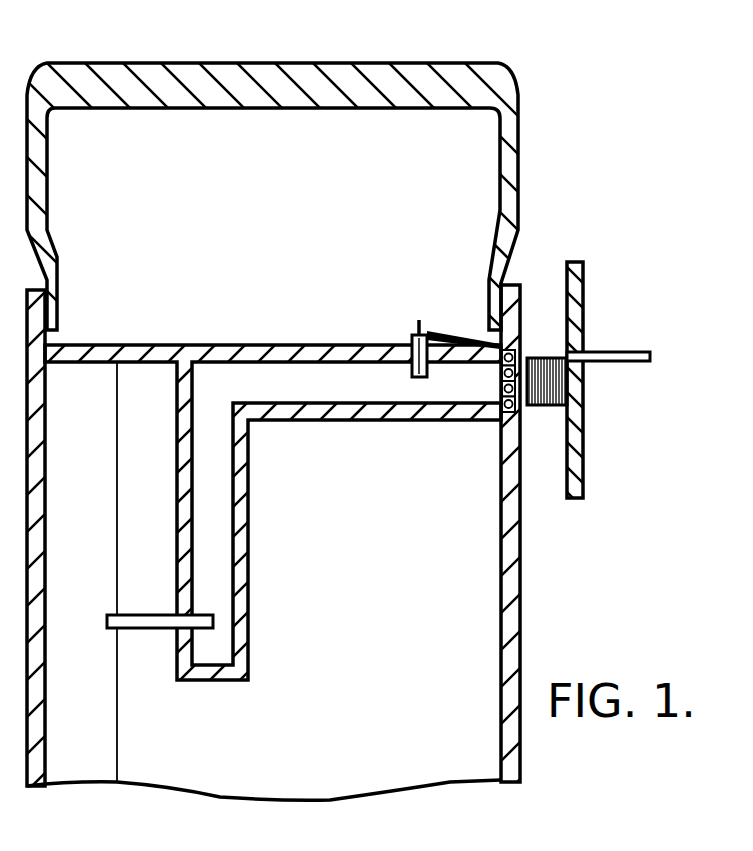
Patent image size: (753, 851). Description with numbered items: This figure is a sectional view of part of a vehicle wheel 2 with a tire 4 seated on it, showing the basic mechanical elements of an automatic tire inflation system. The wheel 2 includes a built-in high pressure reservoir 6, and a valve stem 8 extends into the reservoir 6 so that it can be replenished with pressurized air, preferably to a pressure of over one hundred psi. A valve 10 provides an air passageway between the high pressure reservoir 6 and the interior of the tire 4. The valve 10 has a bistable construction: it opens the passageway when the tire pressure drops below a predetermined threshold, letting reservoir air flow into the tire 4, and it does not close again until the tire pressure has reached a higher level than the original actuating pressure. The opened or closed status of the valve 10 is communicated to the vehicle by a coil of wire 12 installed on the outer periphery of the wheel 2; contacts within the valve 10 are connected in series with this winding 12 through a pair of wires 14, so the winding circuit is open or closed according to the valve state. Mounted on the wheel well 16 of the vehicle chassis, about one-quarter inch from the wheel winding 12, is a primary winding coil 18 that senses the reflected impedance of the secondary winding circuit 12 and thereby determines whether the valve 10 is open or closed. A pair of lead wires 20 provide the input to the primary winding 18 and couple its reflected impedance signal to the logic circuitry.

The vehicle wheel 2 is at (540, 637).
The tire 4 is at (368, 64).
The high pressure reservoir 6 is at (381, 423).
The valve stem 8 is at (157, 622).
The valve 10 is at (406, 330).
The coil of wire 12 is at (505, 351).
The pair of wires 14 is at (447, 331).
The wheel well 16 is at (579, 478).
The primary winding coil 18 is at (545, 406).
The pair of lead wires 20 is at (622, 352).